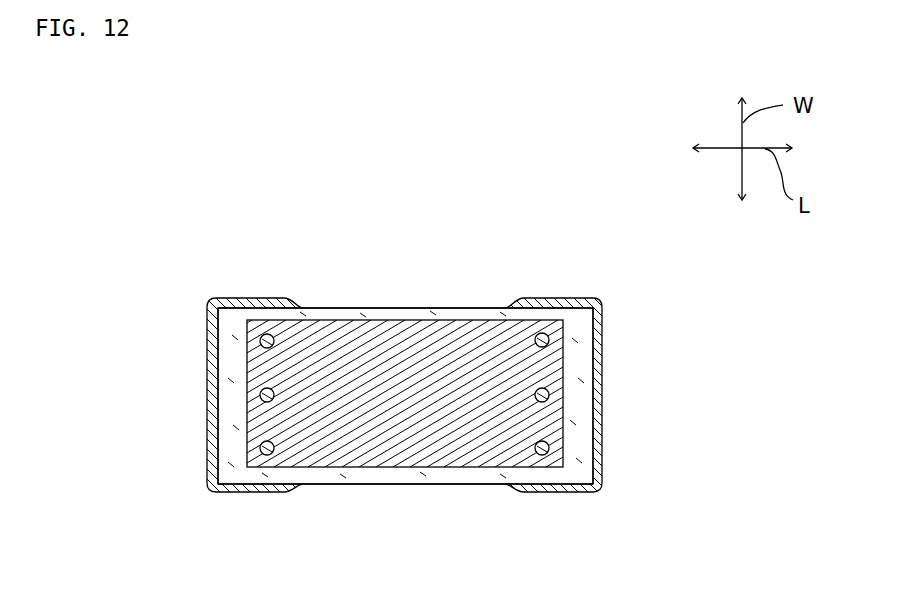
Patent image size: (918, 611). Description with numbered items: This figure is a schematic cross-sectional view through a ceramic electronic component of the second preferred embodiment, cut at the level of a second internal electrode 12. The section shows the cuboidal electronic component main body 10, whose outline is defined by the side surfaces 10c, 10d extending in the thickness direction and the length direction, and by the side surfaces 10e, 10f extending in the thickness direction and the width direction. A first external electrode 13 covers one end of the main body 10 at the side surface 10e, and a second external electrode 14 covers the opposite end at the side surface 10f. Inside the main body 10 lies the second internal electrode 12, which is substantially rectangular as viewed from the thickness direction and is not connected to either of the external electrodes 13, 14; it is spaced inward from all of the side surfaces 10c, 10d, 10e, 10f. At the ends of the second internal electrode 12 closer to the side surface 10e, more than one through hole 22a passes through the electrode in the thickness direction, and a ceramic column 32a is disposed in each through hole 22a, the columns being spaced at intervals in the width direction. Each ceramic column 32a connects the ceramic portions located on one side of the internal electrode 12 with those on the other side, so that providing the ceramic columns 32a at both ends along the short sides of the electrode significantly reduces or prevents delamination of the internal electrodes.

The electronic component main body 10 is at (458, 300).
The side surface 10c is at (383, 308).
The side surface 10d is at (283, 492).
The side surface 10e is at (207, 355).
The side surface 10f is at (594, 354).
The second internal electrode 12 is at (272, 320).
The first external electrode 13 is at (207, 395).
The second external electrode 14 is at (602, 420).
The through hole 22a is at (260, 446).
The ceramic column 32a is at (259, 338).